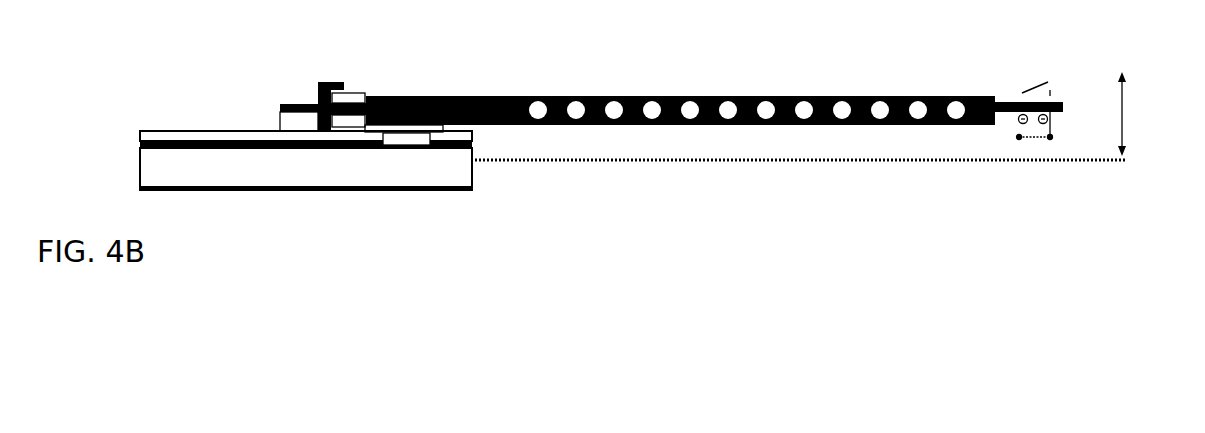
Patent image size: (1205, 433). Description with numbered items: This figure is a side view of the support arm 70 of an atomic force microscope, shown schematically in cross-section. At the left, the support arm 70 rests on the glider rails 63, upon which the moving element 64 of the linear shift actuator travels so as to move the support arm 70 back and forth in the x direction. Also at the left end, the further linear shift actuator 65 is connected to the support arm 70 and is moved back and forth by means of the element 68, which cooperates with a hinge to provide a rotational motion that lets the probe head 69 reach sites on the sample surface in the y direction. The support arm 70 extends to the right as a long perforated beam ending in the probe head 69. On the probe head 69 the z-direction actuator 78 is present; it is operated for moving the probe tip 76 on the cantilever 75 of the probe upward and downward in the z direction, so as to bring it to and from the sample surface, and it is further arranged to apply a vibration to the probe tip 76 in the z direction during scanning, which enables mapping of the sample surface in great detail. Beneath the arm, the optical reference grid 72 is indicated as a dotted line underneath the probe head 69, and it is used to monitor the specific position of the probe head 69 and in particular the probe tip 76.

The glider rails 63 is at (140, 168).
The moving element 64 is at (160, 131).
The further linear shift actuator 65 is at (309, 104).
The element 68 is at (344, 83).
The probe head 69 is at (1065, 108).
The support arm 70 is at (707, 96).
The optical reference grid 72 is at (932, 162).
The cantilever 75 is at (1023, 92).
The probe tip 76 is at (1050, 84).
The z-direction actuator 78 is at (1013, 125).